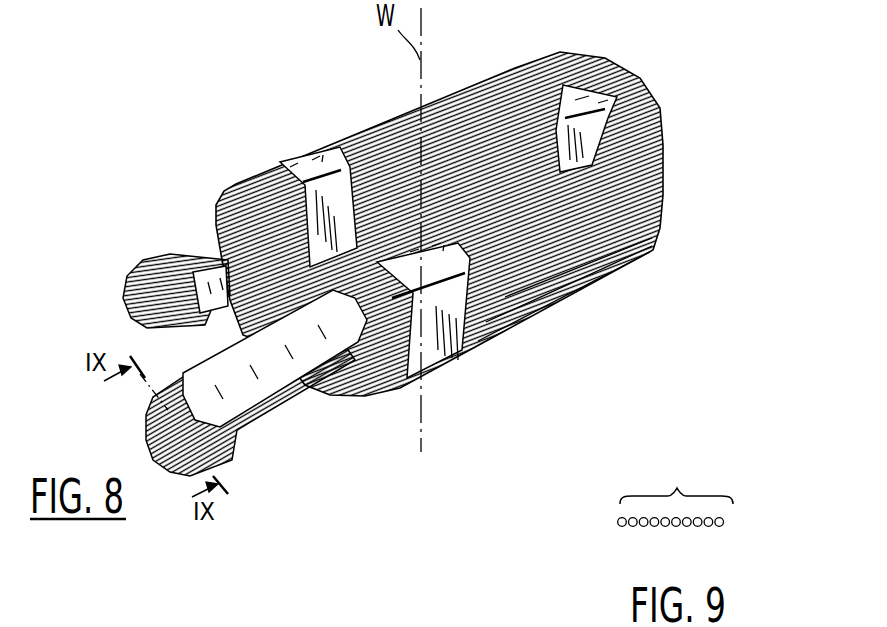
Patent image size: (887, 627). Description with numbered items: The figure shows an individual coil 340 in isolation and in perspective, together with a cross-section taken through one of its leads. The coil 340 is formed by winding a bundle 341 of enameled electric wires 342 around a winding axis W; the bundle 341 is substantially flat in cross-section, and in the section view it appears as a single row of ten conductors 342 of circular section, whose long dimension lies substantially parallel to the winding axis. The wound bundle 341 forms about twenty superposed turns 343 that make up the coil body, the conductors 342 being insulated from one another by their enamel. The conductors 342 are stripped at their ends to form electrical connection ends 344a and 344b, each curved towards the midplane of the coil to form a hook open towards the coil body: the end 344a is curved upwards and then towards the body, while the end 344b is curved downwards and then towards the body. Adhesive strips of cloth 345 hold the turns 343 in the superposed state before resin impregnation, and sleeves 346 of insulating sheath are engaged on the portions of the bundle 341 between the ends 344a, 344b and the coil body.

In FIG. 8, the coil 340 is at (470, 103).
In FIG. 9, the bundle 341 is at (673, 509).
In FIG. 9, the enameled electric wires 342 is at (616, 518).
In FIG. 8, the superposed turns 343 is at (500, 295).
In FIG. 8, the electrical connection end 344a is at (134, 283).
In FIG. 8, the electrical connection end 344b is at (233, 448).
In FIG. 8, the adhesive strips of cloth 345 is at (312, 165).
In FIG. 8, the sleeves of insulating sheath 346 is at (203, 272).